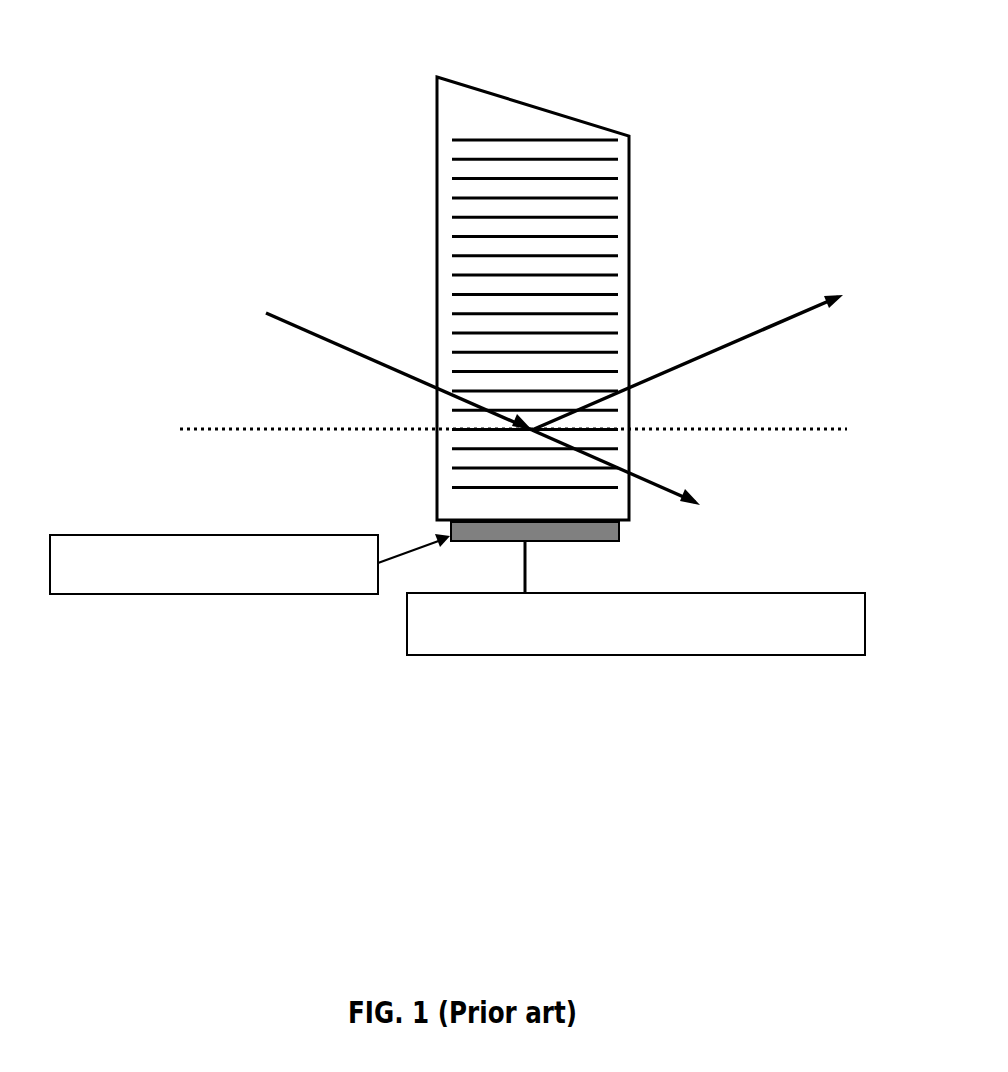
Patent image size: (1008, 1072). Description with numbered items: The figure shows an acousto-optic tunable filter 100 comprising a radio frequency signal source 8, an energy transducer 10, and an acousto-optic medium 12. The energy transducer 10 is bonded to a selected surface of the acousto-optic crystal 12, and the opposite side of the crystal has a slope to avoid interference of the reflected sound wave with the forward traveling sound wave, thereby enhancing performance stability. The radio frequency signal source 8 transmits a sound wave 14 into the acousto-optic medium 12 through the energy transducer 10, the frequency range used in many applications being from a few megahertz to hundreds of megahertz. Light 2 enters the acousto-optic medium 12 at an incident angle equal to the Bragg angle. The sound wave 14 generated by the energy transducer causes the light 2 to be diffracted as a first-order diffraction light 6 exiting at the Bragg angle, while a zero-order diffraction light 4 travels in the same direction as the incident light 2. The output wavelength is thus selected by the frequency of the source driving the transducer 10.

The acousto-optic tunable filter 100 is at (752, 154).
The acousto-optic medium 12 is at (537, 107).
The sound wave 14 is at (568, 136).
The light 2 is at (303, 333).
The zero-order diffraction light 4 is at (650, 473).
The first-order diffraction light 6 is at (672, 375).
The energy transducer 10 is at (617, 538).
The radio frequency signal source 8 is at (627, 655).